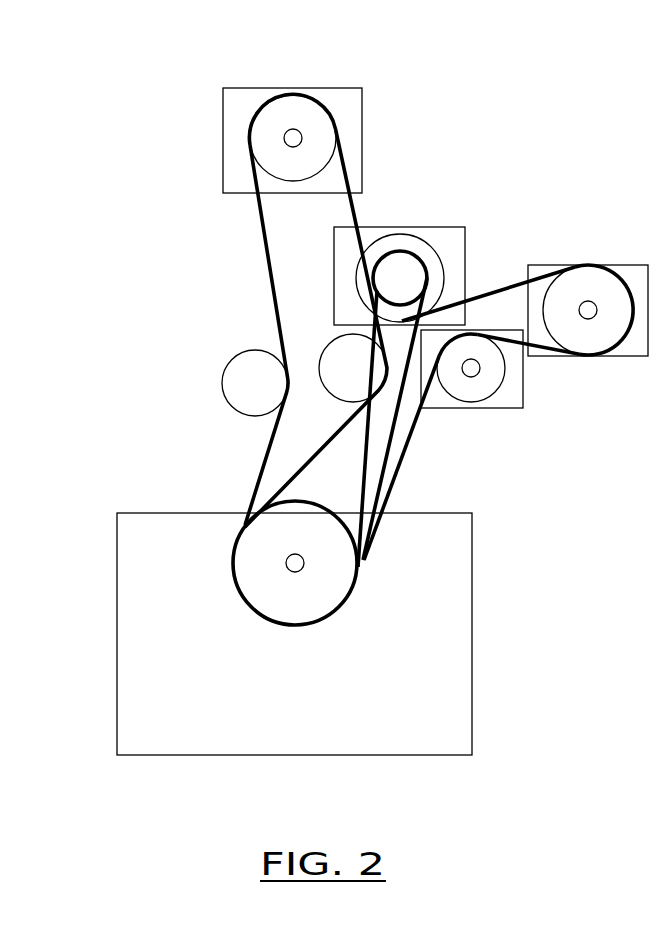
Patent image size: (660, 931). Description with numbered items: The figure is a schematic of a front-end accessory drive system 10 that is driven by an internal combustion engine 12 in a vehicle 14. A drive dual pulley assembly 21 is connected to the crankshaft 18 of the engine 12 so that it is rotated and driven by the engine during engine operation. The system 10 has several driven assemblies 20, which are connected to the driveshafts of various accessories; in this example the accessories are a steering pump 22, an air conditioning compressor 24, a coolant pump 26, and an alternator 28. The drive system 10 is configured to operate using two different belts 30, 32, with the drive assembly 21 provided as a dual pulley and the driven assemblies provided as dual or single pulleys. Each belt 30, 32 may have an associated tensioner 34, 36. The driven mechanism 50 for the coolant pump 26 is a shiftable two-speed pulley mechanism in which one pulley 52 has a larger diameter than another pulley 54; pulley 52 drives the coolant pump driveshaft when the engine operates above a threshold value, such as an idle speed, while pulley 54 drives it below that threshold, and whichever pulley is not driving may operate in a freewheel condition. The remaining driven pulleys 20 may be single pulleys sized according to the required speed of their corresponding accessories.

The front-end accessory drive system 10 is at (366, 383).
The internal combustion engine 12 is at (272, 634).
The vehicle 14 is at (439, 330).
The crankshaft 18 is at (215, 549).
The driven assemblies 20 is at (425, 249).
The drive dual pulley assembly 21 is at (215, 563).
The steering pump 22 is at (510, 377).
The air conditioning compressor 24 is at (593, 271).
The coolant pump 26 is at (427, 265).
The alternator 28 is at (292, 102).
The belt 30 is at (423, 463).
The belt 32 is at (425, 395).
The tensioner 34 is at (216, 382).
The tensioner 36 is at (294, 352).
The driven mechanism 50 is at (403, 215).
The pulley 52 is at (404, 239).
The pulley 54 is at (400, 231).